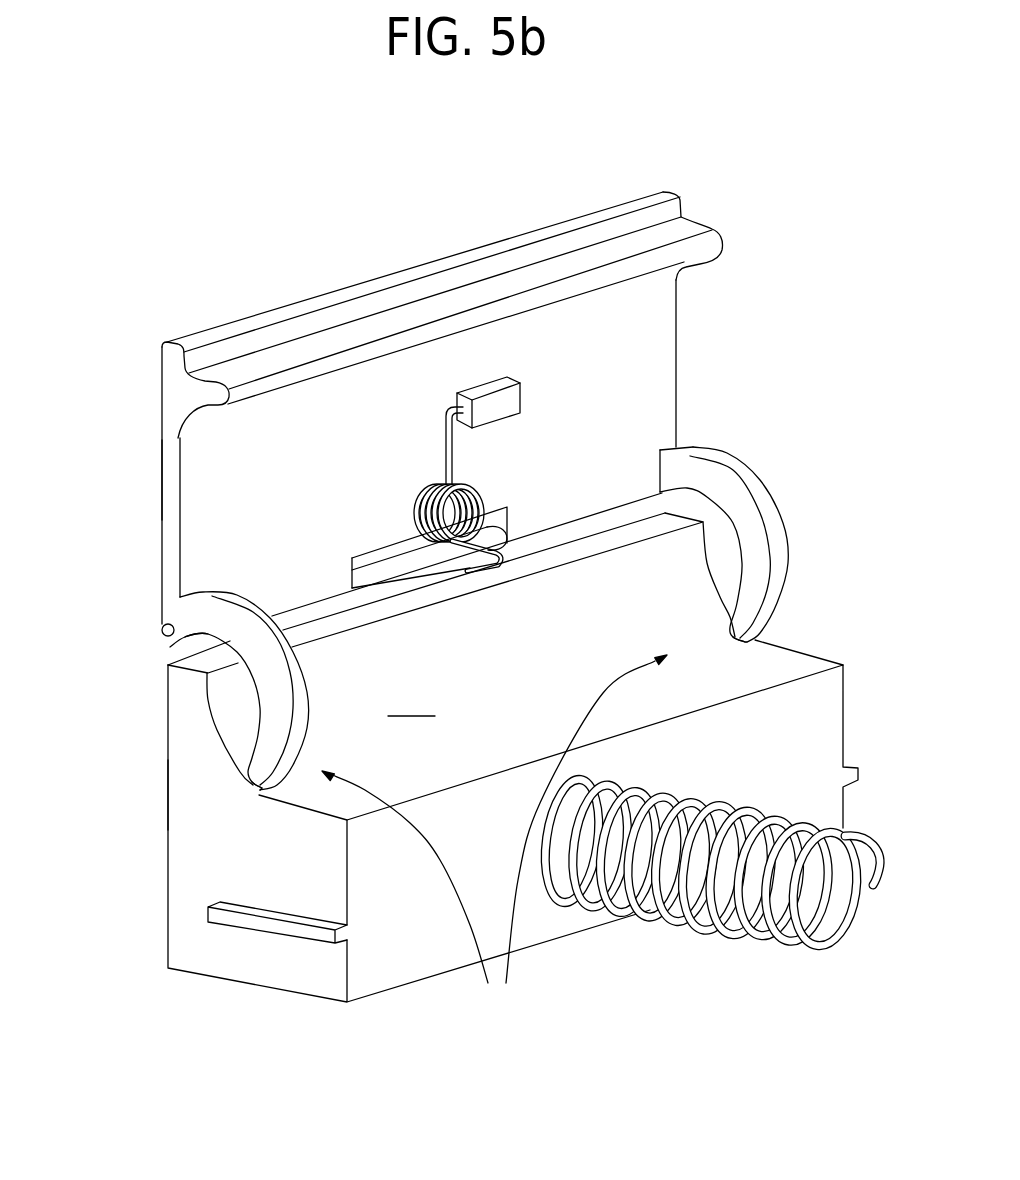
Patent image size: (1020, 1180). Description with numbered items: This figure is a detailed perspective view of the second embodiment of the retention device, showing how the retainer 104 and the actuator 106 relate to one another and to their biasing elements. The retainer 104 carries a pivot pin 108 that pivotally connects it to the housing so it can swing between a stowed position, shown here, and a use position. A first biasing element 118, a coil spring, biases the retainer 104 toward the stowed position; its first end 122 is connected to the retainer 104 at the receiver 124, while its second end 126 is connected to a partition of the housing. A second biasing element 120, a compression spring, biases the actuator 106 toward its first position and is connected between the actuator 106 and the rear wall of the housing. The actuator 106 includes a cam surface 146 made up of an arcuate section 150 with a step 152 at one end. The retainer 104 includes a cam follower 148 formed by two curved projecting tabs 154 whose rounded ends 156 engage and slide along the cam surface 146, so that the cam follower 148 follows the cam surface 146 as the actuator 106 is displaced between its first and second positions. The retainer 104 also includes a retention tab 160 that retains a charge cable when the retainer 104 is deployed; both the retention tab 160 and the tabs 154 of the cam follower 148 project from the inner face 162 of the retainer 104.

The retainer 104 is at (164, 483).
The actuator 106 is at (165, 790).
The pivot pin 108 is at (163, 627).
The first biasing element 118 is at (438, 493).
The second biasing element 120 is at (690, 917).
The first end 122 is at (445, 412).
The receiver 124 is at (503, 410).
The second end 126 is at (487, 572).
The cam surface 146 is at (283, 803).
The cam follower 148 is at (494, 833).
The arcuate section 150 is at (513, 747).
The step 152 is at (196, 663).
The curved projecting tabs 154 is at (263, 688).
The rounded ends 156 is at (250, 785).
The retention tab 160 is at (550, 287).
The inner face 162 is at (650, 355).